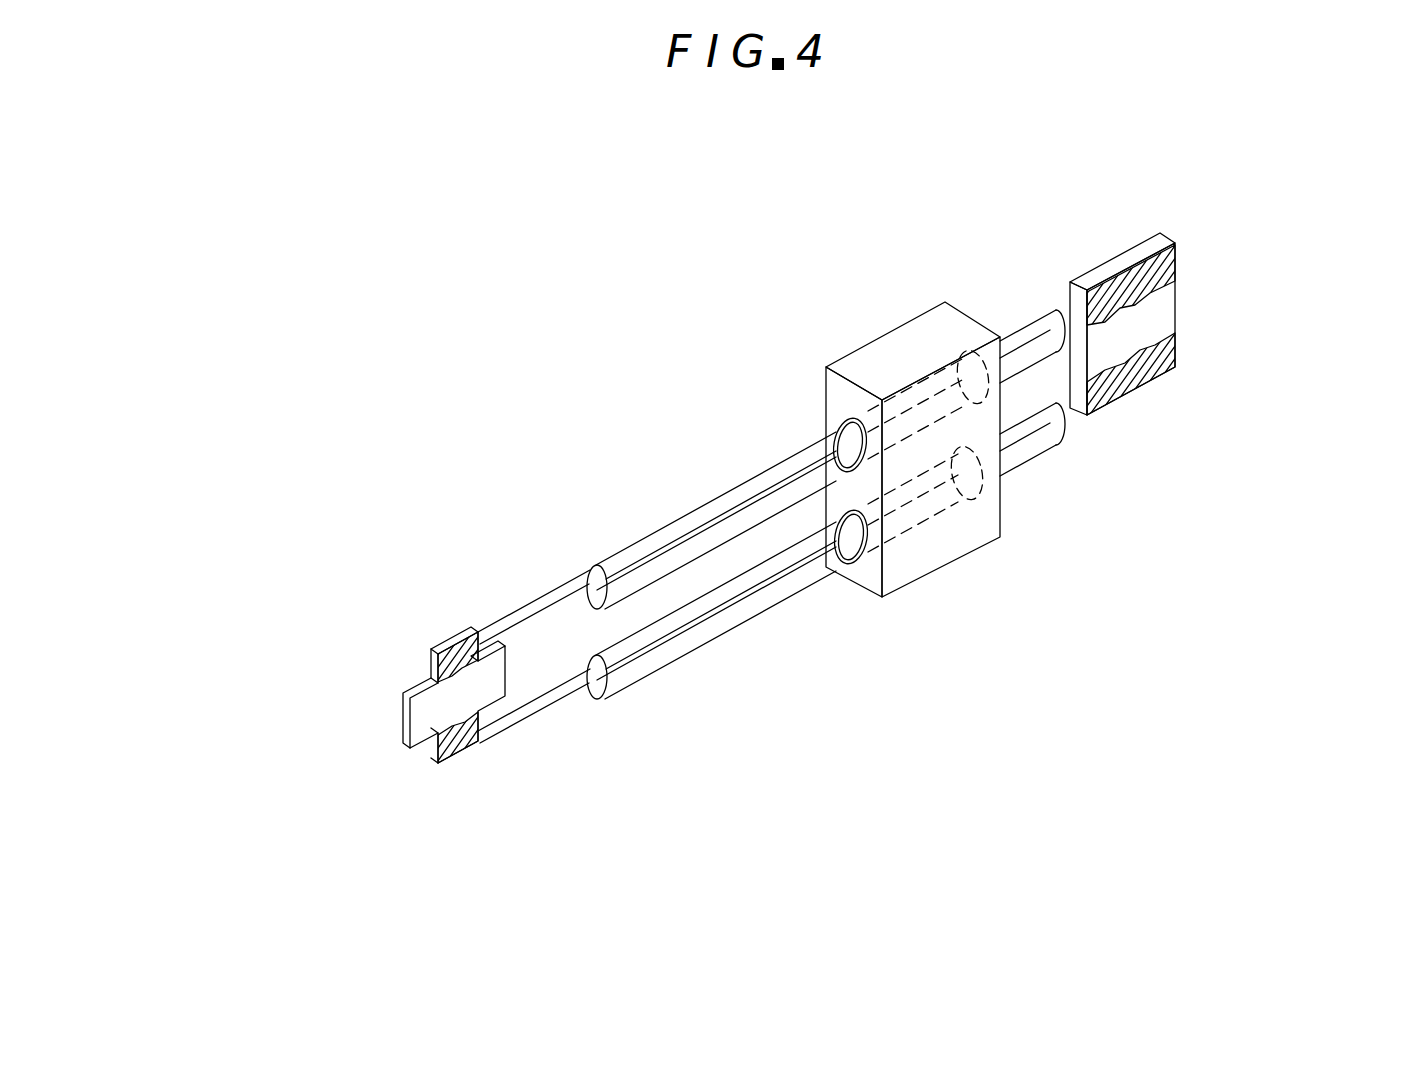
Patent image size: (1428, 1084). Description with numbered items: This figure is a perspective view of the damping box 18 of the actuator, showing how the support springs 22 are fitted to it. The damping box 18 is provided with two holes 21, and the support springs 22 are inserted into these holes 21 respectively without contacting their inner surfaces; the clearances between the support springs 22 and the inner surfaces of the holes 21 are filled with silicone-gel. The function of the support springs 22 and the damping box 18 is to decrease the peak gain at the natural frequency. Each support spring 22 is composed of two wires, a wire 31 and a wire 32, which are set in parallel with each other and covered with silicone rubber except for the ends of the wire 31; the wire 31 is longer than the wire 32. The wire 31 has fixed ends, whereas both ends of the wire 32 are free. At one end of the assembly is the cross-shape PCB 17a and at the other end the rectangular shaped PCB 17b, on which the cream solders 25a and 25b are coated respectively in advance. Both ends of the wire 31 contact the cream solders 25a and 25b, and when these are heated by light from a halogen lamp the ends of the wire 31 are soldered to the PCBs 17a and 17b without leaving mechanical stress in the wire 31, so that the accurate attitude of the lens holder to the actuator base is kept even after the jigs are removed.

The damping box 18 is at (866, 361).
The holes 21 is at (840, 418).
The support springs 22 is at (606, 536).
The wire with fixed ends 31 is at (654, 548).
The wire without fixed ends 32 is at (737, 510).
The cross-shape PCB 17a is at (425, 718).
The rectangular shaped PCB 17b is at (1157, 300).
The cream solder 25a is at (460, 757).
The cream solder 25b is at (1143, 378).